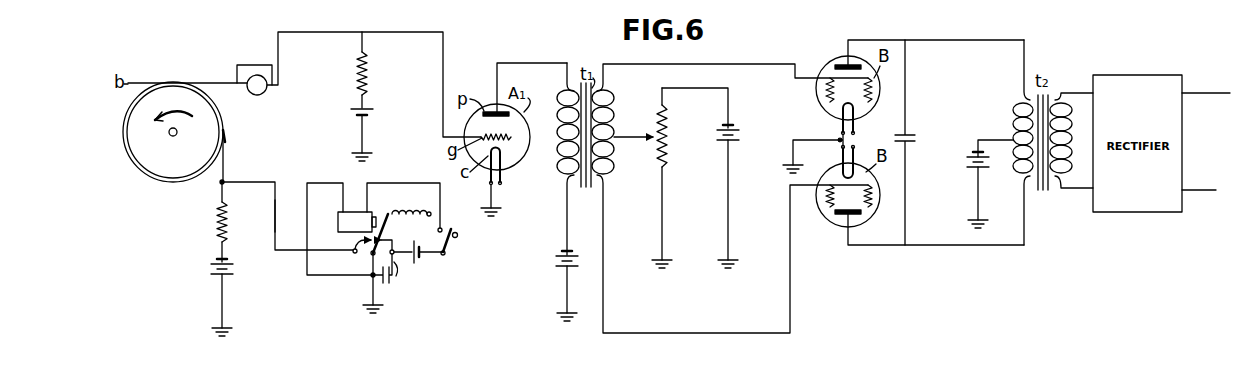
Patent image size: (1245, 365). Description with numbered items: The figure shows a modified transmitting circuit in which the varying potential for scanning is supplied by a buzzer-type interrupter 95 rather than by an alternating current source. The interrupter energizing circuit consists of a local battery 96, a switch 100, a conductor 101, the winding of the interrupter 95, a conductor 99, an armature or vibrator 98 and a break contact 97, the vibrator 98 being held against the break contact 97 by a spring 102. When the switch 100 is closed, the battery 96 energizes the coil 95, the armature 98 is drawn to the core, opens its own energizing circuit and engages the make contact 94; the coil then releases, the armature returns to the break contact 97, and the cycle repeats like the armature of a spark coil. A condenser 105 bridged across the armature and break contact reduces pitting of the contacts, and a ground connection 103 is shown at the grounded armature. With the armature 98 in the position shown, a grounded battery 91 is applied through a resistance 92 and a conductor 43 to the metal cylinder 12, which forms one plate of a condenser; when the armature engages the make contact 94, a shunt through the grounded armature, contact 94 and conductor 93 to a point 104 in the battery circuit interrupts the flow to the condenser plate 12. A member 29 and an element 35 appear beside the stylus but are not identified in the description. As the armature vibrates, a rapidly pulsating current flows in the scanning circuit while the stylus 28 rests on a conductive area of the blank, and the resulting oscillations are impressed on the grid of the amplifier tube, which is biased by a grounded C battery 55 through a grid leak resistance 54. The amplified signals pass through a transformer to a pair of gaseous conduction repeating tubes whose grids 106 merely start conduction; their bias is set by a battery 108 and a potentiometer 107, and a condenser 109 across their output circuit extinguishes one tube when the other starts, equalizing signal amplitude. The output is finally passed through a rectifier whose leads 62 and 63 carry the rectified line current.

The metal cylinder 12 is at (142, 138).
The scanning electrode 28 is at (216, 82).
The brush holder 29 is at (254, 63).
The brush 35 is at (260, 92).
The conductor 43 is at (226, 165).
The grid leak resistance 54 is at (369, 82).
The C battery 55 is at (375, 115).
The grounded battery 91 is at (210, 272).
The resistance 92 is at (216, 216).
The conductor 93 is at (275, 212).
The make contact 94 is at (365, 243).
The interrupter 95 is at (346, 220).
The local battery 96 is at (420, 259).
The break contact 97 is at (400, 272).
The armature 98 is at (392, 237).
The conductor 99 is at (340, 275).
The switch 100 is at (458, 237).
The conductor 101 is at (386, 186).
The spring 102 is at (411, 203).
The ground 103 is at (366, 306).
The point 104 is at (220, 183).
The condenser 105 is at (390, 284).
The grids 106 is at (828, 92).
The potentiometer 107 is at (669, 148).
The battery 108 is at (724, 128).
The condenser 109 is at (912, 135).
The output lead 62 is at (1215, 92).
The output lead 63 is at (1210, 191).